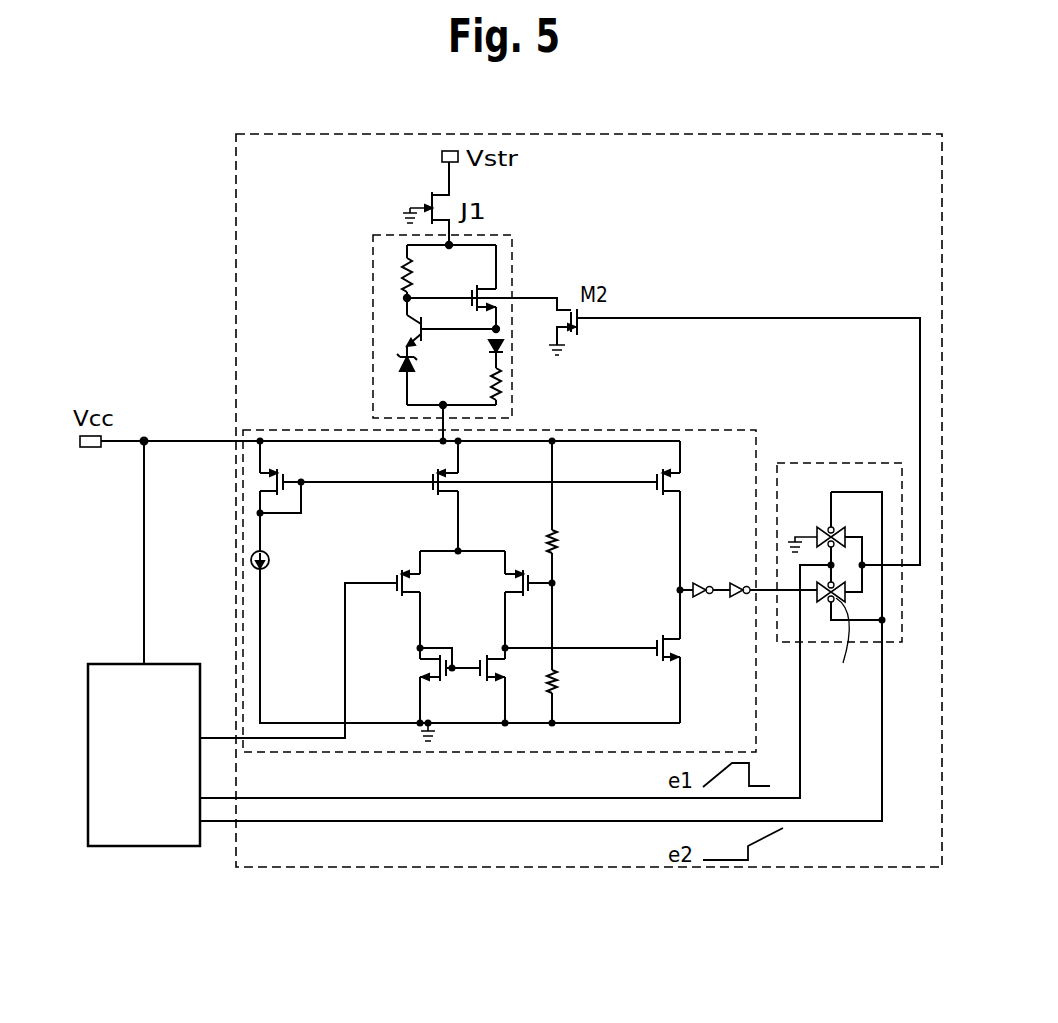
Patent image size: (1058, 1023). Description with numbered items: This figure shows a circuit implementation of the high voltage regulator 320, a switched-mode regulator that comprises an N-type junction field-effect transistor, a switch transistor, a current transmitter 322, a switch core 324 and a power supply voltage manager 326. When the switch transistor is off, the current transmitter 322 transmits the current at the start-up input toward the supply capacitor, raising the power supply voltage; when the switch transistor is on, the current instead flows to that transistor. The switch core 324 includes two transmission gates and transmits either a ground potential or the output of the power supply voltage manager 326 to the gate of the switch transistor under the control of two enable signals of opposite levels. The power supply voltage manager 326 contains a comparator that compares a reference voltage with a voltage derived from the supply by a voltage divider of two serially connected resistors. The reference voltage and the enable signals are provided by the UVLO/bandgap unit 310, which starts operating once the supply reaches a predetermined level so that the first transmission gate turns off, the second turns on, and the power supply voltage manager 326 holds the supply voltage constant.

The UVLO/bandgap unit 310 is at (121, 664).
The high voltage regulator 320 is at (236, 268).
The current transmitter 322 is at (387, 234).
The switch core 324 is at (837, 463).
The power supply voltage manager 326 is at (687, 430).